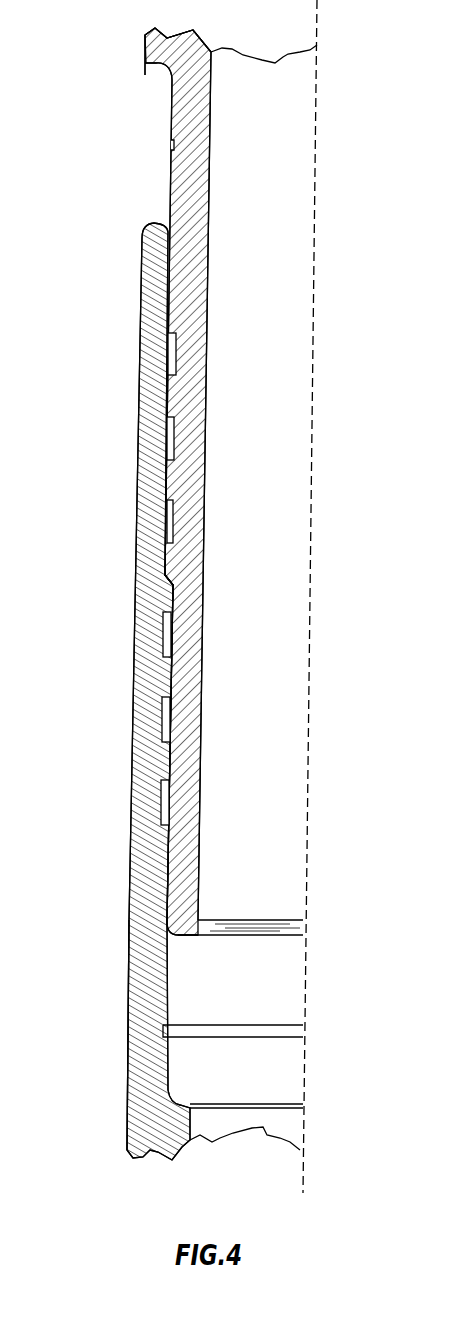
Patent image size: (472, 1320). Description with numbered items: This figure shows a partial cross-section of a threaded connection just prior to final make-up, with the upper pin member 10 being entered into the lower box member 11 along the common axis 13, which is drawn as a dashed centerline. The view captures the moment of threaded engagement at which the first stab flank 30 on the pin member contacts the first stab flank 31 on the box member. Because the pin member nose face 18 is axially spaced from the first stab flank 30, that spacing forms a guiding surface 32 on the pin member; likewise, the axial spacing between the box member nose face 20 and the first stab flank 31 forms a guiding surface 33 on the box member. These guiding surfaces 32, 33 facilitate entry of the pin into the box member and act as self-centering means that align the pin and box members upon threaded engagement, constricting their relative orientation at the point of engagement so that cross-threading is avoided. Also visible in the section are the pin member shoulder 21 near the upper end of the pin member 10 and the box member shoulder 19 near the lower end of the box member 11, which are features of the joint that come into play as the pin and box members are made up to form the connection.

The upper pin member 10 is at (191, 471).
The pin member shoulder 21 is at (152, 51).
The box member nose face 20 is at (140, 666).
The guiding surface on the box member 33 is at (131, 438).
The first stab flank on the pin member 30 is at (210, 550).
The first stab flank on the box member 31 is at (124, 617).
The guiding surface on the pin member 32 is at (178, 637).
The pin member nose face 18 is at (240, 958).
The lower box member 11 is at (89, 1035).
The box member shoulder 19 is at (233, 1087).
The axis 13 is at (344, 596).